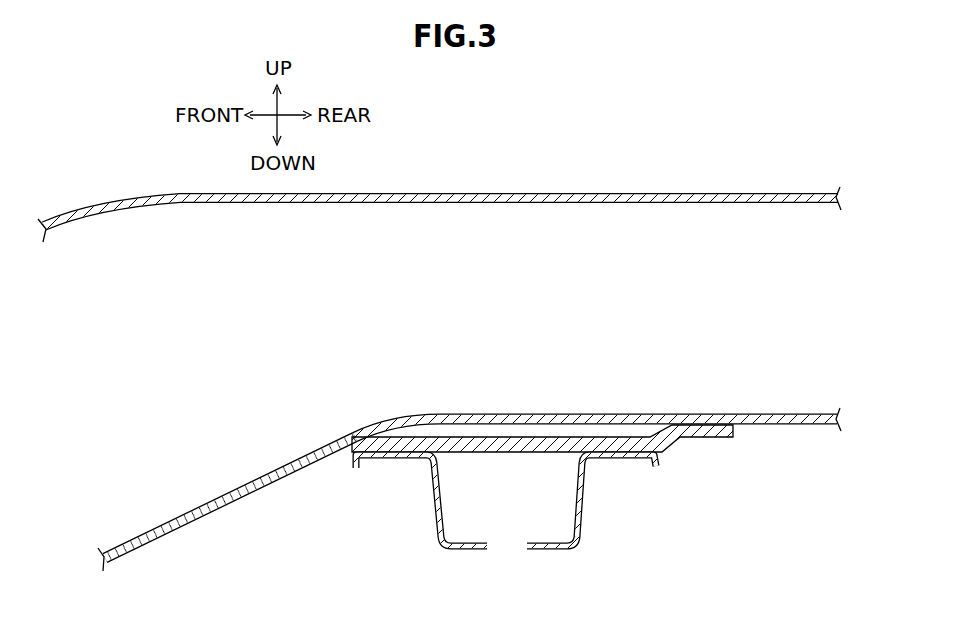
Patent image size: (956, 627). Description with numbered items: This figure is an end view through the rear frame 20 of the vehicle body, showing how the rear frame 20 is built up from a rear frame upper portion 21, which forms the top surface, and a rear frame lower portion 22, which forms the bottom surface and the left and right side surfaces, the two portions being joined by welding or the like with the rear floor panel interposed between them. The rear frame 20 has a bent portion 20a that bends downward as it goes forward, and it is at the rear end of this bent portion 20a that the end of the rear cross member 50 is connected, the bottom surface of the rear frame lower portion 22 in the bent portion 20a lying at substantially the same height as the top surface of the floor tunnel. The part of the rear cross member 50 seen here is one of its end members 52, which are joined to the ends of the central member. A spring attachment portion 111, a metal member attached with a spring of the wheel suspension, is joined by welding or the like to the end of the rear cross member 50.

The rear frame 20 is at (782, 257).
The rear frame upper portion 21 is at (653, 203).
The rear frame lower portion 22 is at (469, 452).
The bent portion 20a is at (232, 505).
The rear cross member 50 is at (703, 437).
The end member 52 is at (564, 468).
The spring attachment portion 111 is at (580, 522).